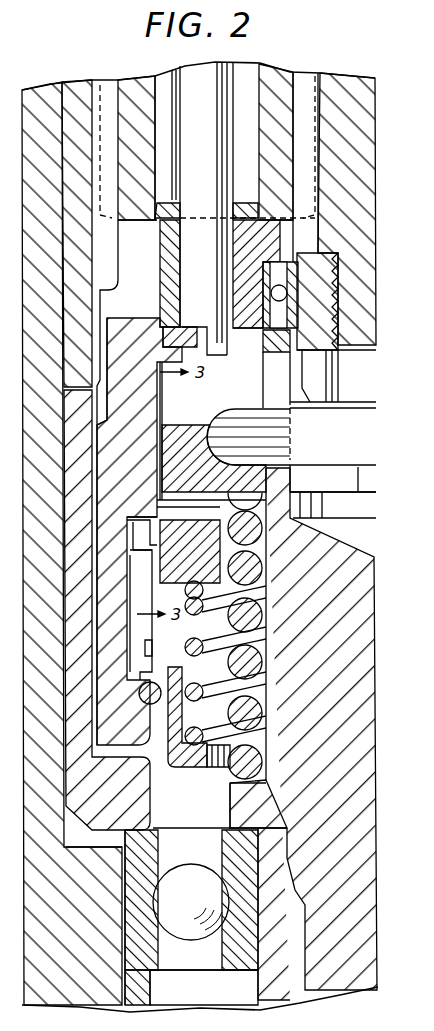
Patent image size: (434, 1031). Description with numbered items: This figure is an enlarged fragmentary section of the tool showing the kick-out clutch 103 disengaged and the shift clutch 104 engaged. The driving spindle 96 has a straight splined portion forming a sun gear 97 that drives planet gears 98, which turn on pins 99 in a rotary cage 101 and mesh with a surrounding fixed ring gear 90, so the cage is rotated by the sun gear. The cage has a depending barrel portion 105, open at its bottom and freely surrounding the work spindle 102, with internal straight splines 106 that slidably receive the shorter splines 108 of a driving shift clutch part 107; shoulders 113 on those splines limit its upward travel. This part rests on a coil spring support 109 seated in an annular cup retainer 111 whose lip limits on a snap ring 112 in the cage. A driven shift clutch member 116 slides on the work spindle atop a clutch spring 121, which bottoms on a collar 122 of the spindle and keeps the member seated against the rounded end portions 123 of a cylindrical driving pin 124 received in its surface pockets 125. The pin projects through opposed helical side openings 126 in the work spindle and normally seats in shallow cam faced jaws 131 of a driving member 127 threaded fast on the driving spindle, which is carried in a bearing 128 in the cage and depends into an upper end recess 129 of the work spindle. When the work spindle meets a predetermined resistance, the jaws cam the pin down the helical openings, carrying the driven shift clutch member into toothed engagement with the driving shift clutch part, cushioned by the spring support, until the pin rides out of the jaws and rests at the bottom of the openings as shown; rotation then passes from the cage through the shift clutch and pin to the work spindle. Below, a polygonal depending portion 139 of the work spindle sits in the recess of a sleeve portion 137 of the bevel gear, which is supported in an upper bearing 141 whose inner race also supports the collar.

The fixed ring gear 90 is at (107, 243).
The driving spindle 96 is at (340, 86).
The sun gear 97 is at (305, 147).
The planet gears 98 is at (110, 84).
The pins 99 is at (196, 78).
The rotary cage 101 is at (116, 328).
The work spindle 102 is at (316, 653).
The kick-out clutch 103 is at (238, 352).
The shift clutch 104 is at (148, 505).
The barrel portion 105 is at (90, 566).
The internal straight splines 106 is at (146, 649).
The driving shift clutch part 107 is at (184, 555).
The splines 108 is at (130, 572).
The coil spring support 109 is at (170, 744).
The annular cup retainer 111 is at (198, 766).
The snap ring 112 is at (136, 694).
The shoulders 113 is at (141, 516).
The driven shift clutch member 116 is at (168, 428).
The clutch spring 121 is at (272, 720).
The collar 122 is at (230, 808).
The rounded end portions 123 is at (213, 457).
The driving pin 124 is at (333, 505).
The surface pockets 125 is at (208, 424).
The helical side openings 126 is at (280, 388).
The driving member 127 is at (334, 258).
The bearing 128 is at (267, 273).
The upper end recess 129 is at (314, 480).
The cam faced jaws 131 is at (320, 385).
The sleeve portion 137 is at (258, 946).
The polygonal depending portion 139 is at (300, 977).
The upper bearing 141 is at (152, 857).